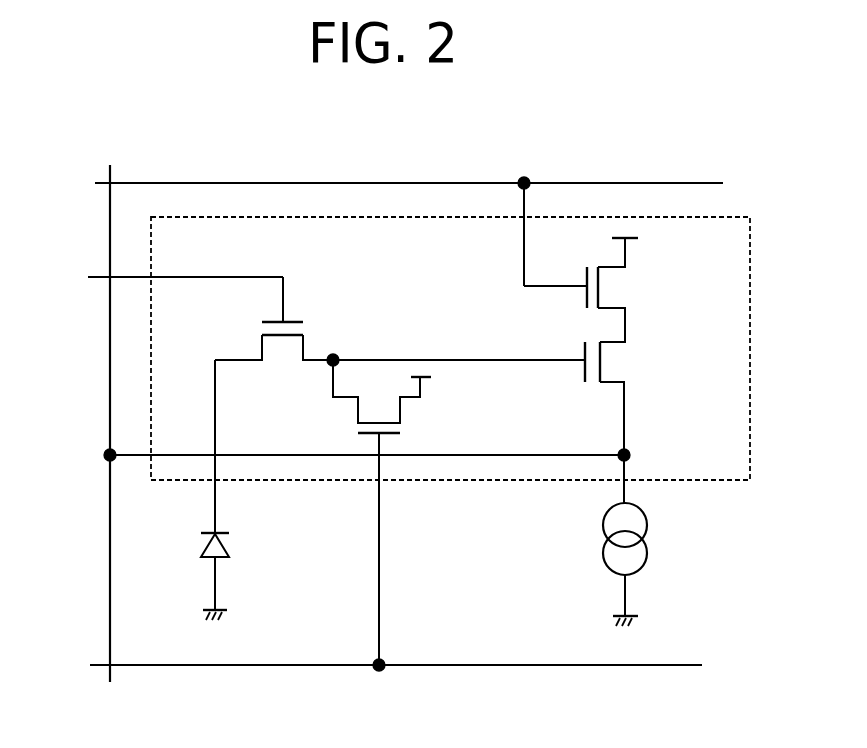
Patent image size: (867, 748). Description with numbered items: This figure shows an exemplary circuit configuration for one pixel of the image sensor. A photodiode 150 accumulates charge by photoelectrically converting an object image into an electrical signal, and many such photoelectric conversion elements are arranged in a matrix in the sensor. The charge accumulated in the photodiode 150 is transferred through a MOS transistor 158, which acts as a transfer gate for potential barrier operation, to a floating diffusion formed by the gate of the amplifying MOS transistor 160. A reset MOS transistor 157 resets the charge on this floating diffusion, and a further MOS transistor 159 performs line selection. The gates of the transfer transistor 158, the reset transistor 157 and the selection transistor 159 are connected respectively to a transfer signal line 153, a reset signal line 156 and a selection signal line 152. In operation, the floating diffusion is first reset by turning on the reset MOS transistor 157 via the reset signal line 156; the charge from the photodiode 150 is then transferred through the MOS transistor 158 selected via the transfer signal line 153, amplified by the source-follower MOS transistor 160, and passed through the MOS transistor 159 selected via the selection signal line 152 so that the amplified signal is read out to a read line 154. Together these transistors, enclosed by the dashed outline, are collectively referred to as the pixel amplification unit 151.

The photodiode 150 is at (227, 545).
The pixel amplification unit 151 is at (750, 328).
The selection signal line 152 is at (368, 180).
The transfer signal line 153 is at (98, 278).
The read line 154 is at (110, 412).
The reset signal line 156 is at (322, 668).
The reset MOS transistor 157 is at (400, 402).
The MOS transistor for a transfer gate 158 is at (304, 345).
The MOS transistor for line selection 159 is at (615, 285).
The amplifying MOS transistor 160 is at (615, 358).